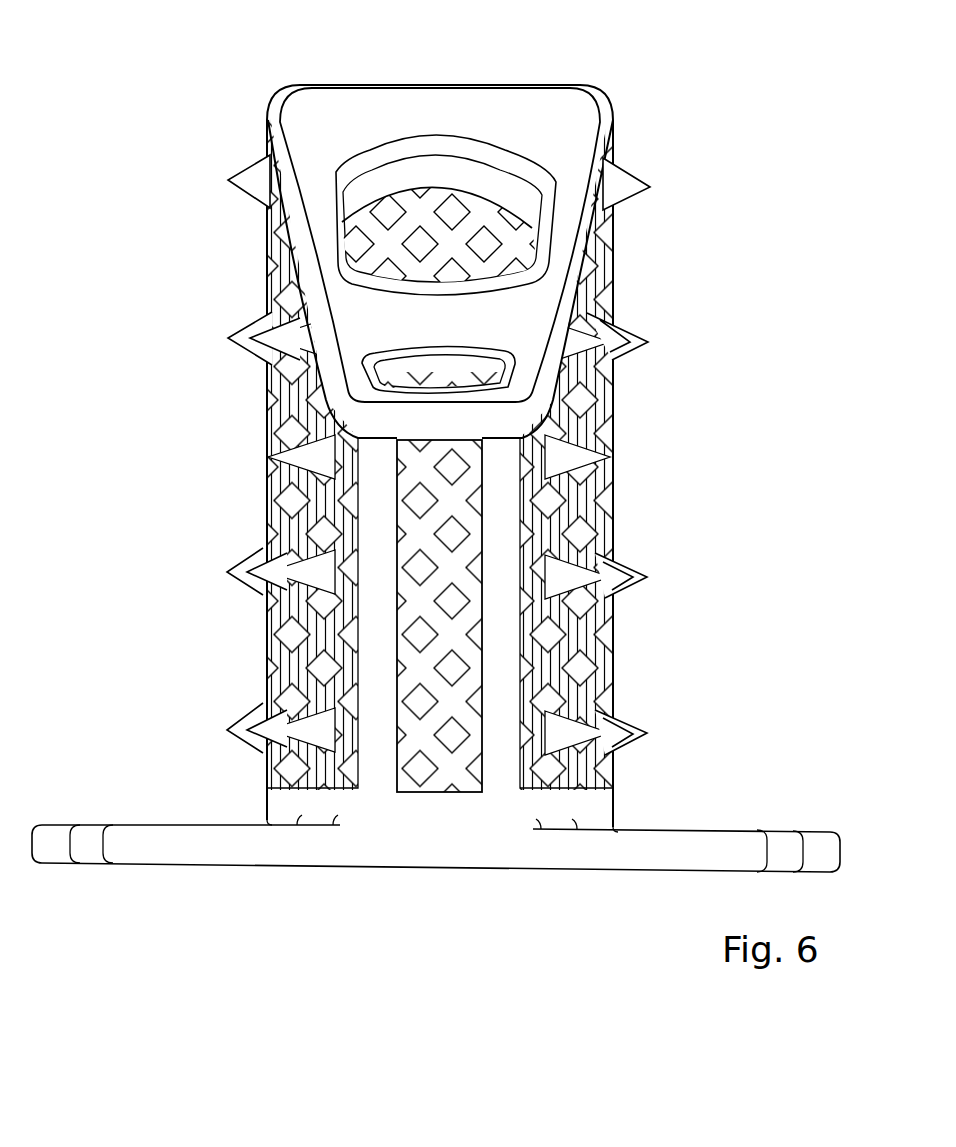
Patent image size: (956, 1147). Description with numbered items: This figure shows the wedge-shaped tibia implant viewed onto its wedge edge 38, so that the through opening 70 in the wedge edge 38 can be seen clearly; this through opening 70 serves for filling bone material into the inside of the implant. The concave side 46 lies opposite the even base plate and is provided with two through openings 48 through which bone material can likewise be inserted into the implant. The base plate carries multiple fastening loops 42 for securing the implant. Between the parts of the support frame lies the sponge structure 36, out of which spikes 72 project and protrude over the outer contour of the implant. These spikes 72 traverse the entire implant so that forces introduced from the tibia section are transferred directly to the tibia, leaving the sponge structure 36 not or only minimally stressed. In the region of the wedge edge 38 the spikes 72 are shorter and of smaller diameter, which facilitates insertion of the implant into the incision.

The sponge structure 36 is at (610, 275).
The wedge edge 38 is at (507, 690).
The fastening loops 42 is at (165, 850).
The concave side 46 is at (332, 133).
The through openings 48 is at (484, 213).
The through opening 70 is at (430, 752).
The spikes 72 is at (624, 182).